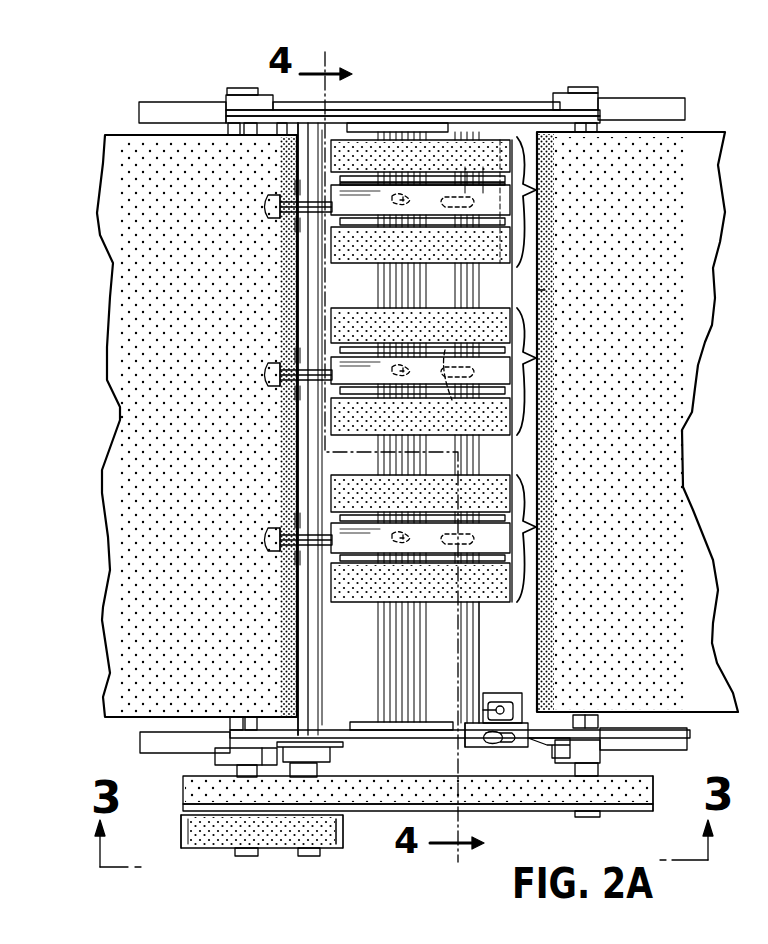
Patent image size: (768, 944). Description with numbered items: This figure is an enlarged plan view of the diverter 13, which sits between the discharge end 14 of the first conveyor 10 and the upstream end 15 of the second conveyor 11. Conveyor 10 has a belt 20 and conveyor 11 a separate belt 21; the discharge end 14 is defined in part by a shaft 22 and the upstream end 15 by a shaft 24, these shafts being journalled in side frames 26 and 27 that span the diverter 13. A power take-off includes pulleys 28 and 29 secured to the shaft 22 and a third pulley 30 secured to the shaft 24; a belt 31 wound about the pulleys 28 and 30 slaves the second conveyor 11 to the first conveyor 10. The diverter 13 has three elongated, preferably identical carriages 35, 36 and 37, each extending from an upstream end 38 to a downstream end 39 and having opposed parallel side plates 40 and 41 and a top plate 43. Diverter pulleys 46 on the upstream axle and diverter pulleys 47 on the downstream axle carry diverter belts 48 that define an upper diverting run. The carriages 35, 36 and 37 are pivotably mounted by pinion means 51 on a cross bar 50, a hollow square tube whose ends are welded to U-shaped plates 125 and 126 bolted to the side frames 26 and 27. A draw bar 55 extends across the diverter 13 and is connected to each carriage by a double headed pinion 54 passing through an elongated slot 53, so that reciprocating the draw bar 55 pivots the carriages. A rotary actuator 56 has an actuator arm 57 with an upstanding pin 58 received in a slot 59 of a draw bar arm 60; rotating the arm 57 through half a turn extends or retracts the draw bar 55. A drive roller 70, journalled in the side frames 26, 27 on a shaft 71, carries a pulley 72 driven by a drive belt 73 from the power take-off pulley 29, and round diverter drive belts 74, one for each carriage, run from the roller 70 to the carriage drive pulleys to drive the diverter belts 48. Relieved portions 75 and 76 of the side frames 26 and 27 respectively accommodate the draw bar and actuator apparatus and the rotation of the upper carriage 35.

The first conveyor 10 is at (158, 88).
The second conveyor 11 is at (735, 123).
The diverter 13 is at (376, 387).
The discharge end 14 is at (305, 460).
The upstream end 15 is at (545, 498).
The belt 20 is at (175, 440).
The belt 21 is at (684, 420).
The shaft 22 is at (243, 856).
The shaft 24 is at (584, 818).
The side frame 26 is at (686, 738).
The side frame 27 is at (685, 100).
The pulley 28 is at (183, 785).
The pulley 29 is at (186, 850).
The third pulley 30 is at (654, 811).
The belt 31 is at (411, 803).
The carriage 35 is at (536, 187).
The carriage 36 is at (536, 358).
The carriage 37 is at (536, 527).
The upstream end 38 is at (332, 323).
The downstream end 39 is at (536, 290).
The side plate 40 is at (445, 350).
The side plate 41 is at (452, 400).
The top plate 43 is at (330, 382).
The diverter pulley 46 is at (356, 604).
The diverter pulley 47 is at (500, 604).
The diverter belt 48 is at (340, 574).
The cross bar 50 is at (385, 673).
The pinion means 51 is at (412, 203).
The elongated slot 53 is at (498, 123).
The double headed pinion 54 is at (470, 114).
The draw bar 55 is at (482, 653).
The rotary actuator 56 is at (522, 695).
The actuator arm 57 is at (488, 706).
The upstanding pin 58 is at (520, 745).
The slot 59 is at (464, 741).
The draw bar arm 60 is at (490, 744).
The drive roller 70 is at (300, 484).
The shaft 71 is at (312, 856).
The pulley 72 is at (340, 848).
The drive belt 73 is at (210, 833).
The diverter drive belt 74 is at (266, 224).
The relieved portion 75 is at (425, 738).
The relieved portion 76 is at (492, 123).
The U-shaped plate 125 is at (356, 722).
The U-shaped plate 126 is at (405, 123).